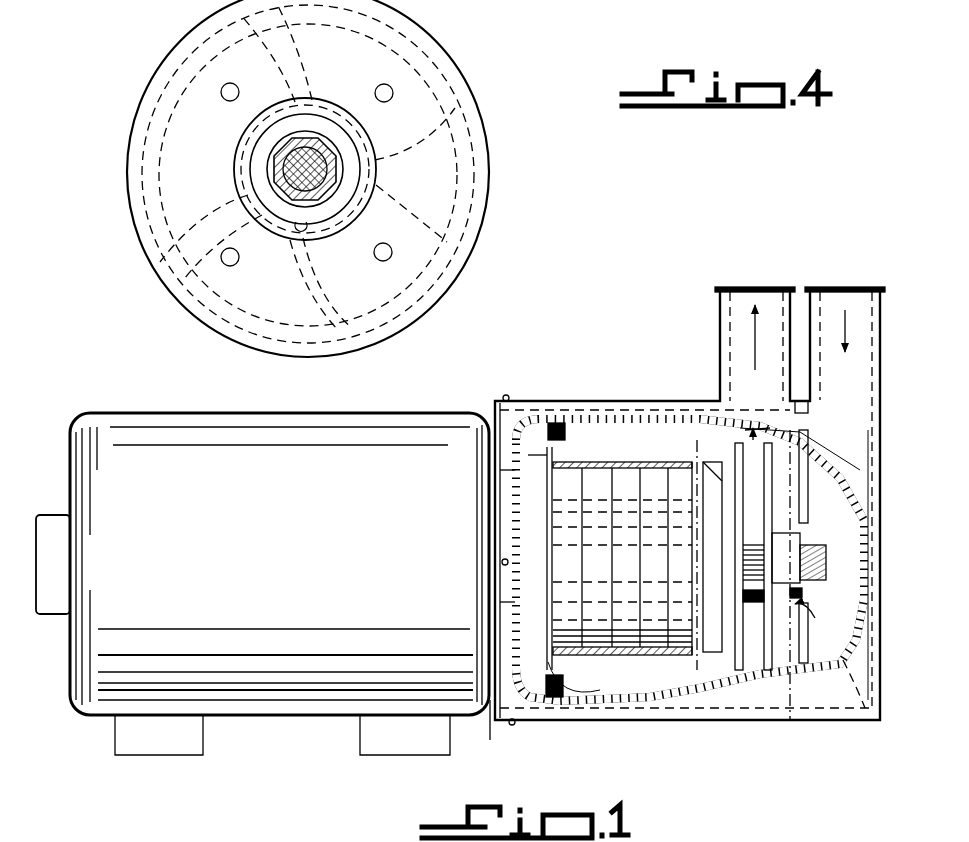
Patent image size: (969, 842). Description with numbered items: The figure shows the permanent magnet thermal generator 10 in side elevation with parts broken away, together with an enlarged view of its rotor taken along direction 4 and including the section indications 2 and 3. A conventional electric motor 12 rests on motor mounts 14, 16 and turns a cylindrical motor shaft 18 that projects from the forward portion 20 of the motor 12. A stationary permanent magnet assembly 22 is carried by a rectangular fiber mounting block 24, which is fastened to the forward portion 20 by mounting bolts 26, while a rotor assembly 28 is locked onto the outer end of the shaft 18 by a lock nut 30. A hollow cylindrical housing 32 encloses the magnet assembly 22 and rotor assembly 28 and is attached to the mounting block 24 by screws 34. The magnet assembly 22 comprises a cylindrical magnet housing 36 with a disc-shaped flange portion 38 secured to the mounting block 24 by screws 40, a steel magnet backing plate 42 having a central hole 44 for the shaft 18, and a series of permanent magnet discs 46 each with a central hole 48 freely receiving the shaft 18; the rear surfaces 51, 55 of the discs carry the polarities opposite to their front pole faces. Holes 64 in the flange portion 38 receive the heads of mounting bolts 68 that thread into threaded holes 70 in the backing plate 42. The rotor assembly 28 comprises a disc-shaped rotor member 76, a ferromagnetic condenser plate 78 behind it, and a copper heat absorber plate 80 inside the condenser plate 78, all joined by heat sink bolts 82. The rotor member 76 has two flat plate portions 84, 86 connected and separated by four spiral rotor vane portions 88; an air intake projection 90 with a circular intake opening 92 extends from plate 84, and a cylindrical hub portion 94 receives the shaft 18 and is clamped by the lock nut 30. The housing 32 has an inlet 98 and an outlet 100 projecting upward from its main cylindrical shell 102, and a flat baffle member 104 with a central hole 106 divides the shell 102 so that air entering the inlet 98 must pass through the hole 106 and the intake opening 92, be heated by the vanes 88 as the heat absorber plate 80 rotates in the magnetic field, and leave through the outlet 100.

In FIG. 1, the section line 2- 2 is at (700, 452).
In FIG. 1, the section line 3- 3 is at (598, 415).
In FIG. 1, the section line 4- 4 is at (778, 450).
In FIG. 1, the permanent magnet thermal generator 10 is at (525, 368).
In FIG. 1, the electric motor 12 is at (270, 559).
In FIG. 1, the motor mount 14 is at (120, 748).
In FIG. 1, the motor mount 16 is at (375, 748).
In FIG. 4, the motor shaft 18 is at (345, 186).
In FIG. 1, the motor shaft 18 is at (548, 560).
In FIG. 1, the forward portion of the motor 20 is at (485, 720).
In FIG. 1, the permanent magnet assembly 22 is at (640, 700).
In FIG. 1, the fiber mounting block 24 is at (532, 700).
In FIG. 1, the mounting bolt 26 is at (565, 428).
In FIG. 4, the rotor assembly 28 is at (462, 68).
In FIG. 1, the rotor assembly 28 is at (727, 445).
In FIG. 4, the lock nut 30 is at (300, 140).
In FIG. 1, the lock nut 30 is at (800, 598).
In FIG. 1, the housing 32 is at (638, 398).
In FIG. 1, the screw 34 is at (504, 395).
In FIG. 1, the magnet housing 36 is at (610, 470).
In FIG. 1, the flange portion 38 is at (580, 540).
In FIG. 1, the screw 40 is at (548, 462).
In FIG. 1, the magnet backing plate 42 is at (548, 450).
In FIG. 1, the hole 44 is at (520, 595).
In FIG. 1, the permanent magnet disc 46 is at (675, 432).
In FIG. 1, the hole 48 is at (666, 700).
In FIG. 1, the semi-circular surface 51 is at (660, 477).
In FIG. 1, the semi-circular surface 55 is at (685, 725).
In FIG. 1, the hole 64 is at (557, 530).
In FIG. 1, the mounting bolt 68 is at (600, 528).
In FIG. 1, the threaded hole 70 is at (578, 520).
In FIG. 4, the rotor member 76 is at (470, 265).
In FIG. 1, the rotor member 76 is at (800, 705).
In FIG. 1, the condenser plate 78 is at (748, 695).
In FIG. 1, the heat absorber plate 80 is at (710, 420).
In FIG. 4, the heat sink bolt 82 is at (390, 88).
In FIG. 4, the flat plate portion 84 is at (202, 297).
In FIG. 1, the flat plate portion 84 is at (802, 431).
In FIG. 1, the flat plate portion 86 is at (760, 438).
In FIG. 4, the spiral rotor vane portion 88 is at (302, 75).
In FIG. 1, the spiral rotor vane portion 88 is at (760, 520).
In FIG. 4, the air intake projection 90 is at (367, 212).
In FIG. 1, the air intake projection 90 is at (803, 652).
In FIG. 4, the intake opening 92 is at (296, 226).
In FIG. 4, the hub portion 94 is at (336, 153).
In FIG. 1, the inlet 98 is at (842, 300).
In FIG. 1, the outlet 100 is at (774, 300).
In FIG. 1, the cylindrical hollow shell 102 is at (862, 420).
In FIG. 1, the baffle member 104 is at (868, 452).
In FIG. 1, the hole 106 is at (815, 530).